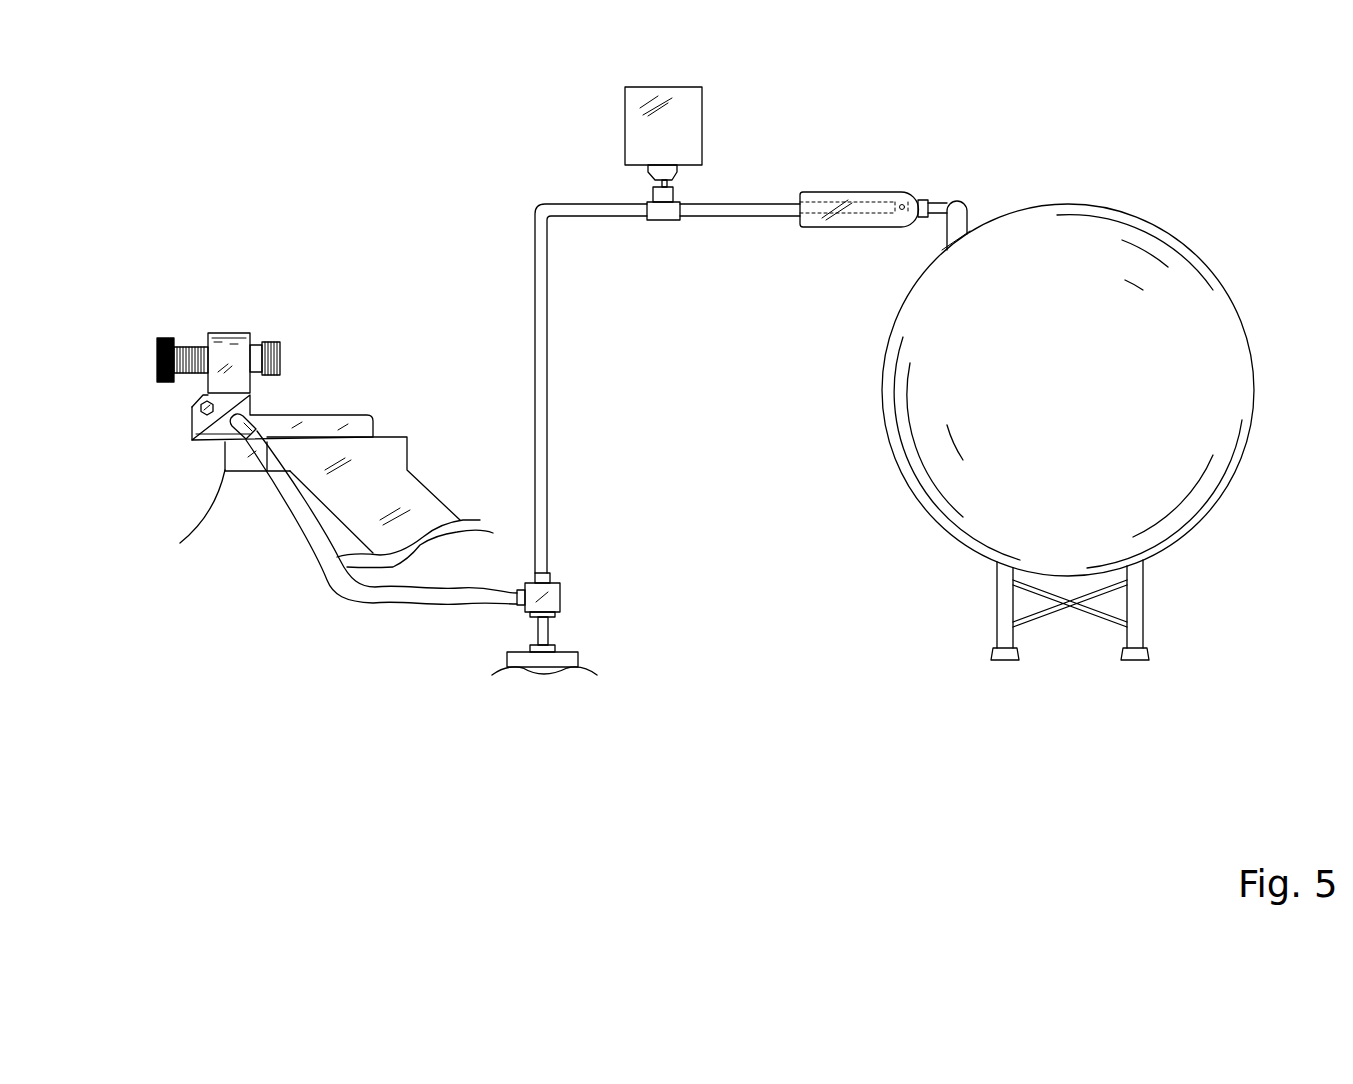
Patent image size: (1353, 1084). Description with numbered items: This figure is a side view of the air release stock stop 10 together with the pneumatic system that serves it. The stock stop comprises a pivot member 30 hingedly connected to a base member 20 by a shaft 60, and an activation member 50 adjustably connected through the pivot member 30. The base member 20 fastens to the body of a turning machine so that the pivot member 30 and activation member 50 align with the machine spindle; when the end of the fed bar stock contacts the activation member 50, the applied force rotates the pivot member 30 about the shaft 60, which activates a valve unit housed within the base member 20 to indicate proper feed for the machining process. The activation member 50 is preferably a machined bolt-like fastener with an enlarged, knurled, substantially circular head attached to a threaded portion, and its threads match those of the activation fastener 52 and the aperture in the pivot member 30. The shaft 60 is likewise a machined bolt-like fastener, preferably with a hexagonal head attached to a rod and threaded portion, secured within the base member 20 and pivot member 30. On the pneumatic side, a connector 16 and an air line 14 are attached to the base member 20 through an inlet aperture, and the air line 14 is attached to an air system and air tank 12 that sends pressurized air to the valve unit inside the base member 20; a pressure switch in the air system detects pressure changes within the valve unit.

The air release stock stop 10 is at (238, 232).
The air tank 12 is at (1177, 290).
The air line 14 is at (372, 593).
The connector 16 is at (233, 437).
The base member 20 is at (345, 401).
The pivot member 30 is at (239, 323).
The activation member 50 is at (167, 322).
The activation fastener 52 is at (270, 333).
The shaft 60 is at (179, 441).